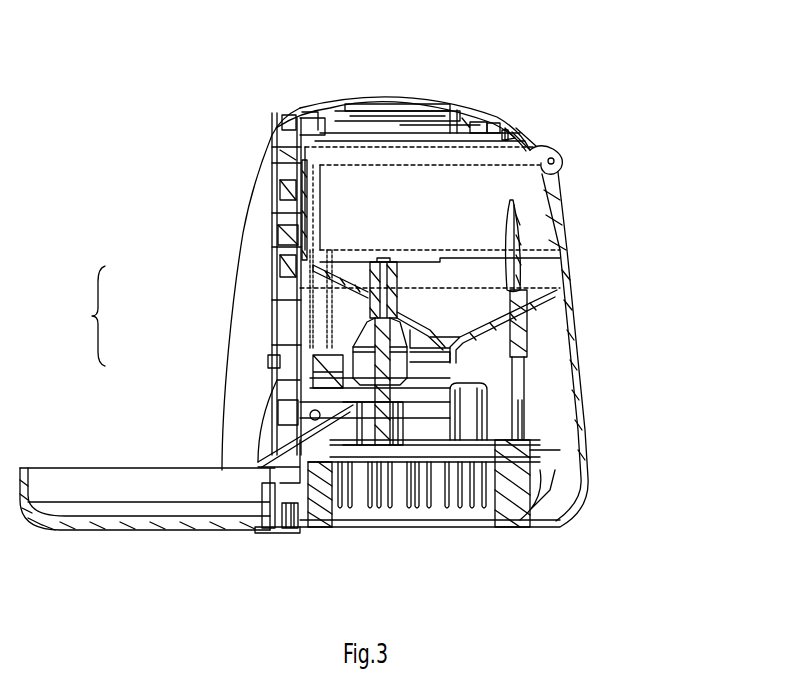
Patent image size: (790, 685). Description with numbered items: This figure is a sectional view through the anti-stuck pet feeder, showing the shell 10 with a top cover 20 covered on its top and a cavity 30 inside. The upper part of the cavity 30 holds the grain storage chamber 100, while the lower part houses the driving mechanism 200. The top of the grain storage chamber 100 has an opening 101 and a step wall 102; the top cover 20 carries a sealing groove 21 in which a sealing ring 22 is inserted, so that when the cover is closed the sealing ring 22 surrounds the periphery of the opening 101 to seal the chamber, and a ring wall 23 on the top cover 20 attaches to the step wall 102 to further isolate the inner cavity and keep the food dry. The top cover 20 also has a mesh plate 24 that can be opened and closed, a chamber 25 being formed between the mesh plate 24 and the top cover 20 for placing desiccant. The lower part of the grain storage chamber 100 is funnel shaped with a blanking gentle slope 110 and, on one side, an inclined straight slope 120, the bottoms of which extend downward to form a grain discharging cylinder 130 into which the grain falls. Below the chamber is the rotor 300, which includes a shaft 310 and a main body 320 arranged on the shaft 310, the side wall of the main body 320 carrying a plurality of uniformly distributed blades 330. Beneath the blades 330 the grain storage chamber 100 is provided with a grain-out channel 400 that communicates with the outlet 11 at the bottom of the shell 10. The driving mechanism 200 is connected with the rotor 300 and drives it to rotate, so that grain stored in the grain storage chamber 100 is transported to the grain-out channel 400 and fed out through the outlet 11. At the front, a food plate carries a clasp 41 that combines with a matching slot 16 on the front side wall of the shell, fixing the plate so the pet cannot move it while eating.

The shell 10 is at (265, 157).
The outlet 11 is at (288, 456).
The slot 16 is at (290, 525).
The top cover 20 is at (444, 108).
The sealing groove 21 is at (326, 105).
The sealing ring 22 is at (310, 108).
The ring wall 23 is at (508, 135).
The mesh plate 24 is at (367, 110).
The chamber 25 is at (408, 110).
The cavity 30 is at (568, 365).
The clasp 41 is at (272, 530).
The grain storage chamber 100 is at (522, 207).
The opening 101 is at (477, 110).
The step wall 102 is at (517, 137).
The blanking gentle slope 110 is at (330, 293).
The inclined straight slope 120 is at (558, 292).
The grain discharging cylinder 130 is at (455, 378).
The driving mechanism 200 is at (465, 470).
The rotor 300 is at (71, 316).
The shaft 310 is at (352, 300).
The main body 320 is at (352, 350).
The blades 330 is at (330, 388).
The grain-out channel 400 is at (305, 398).